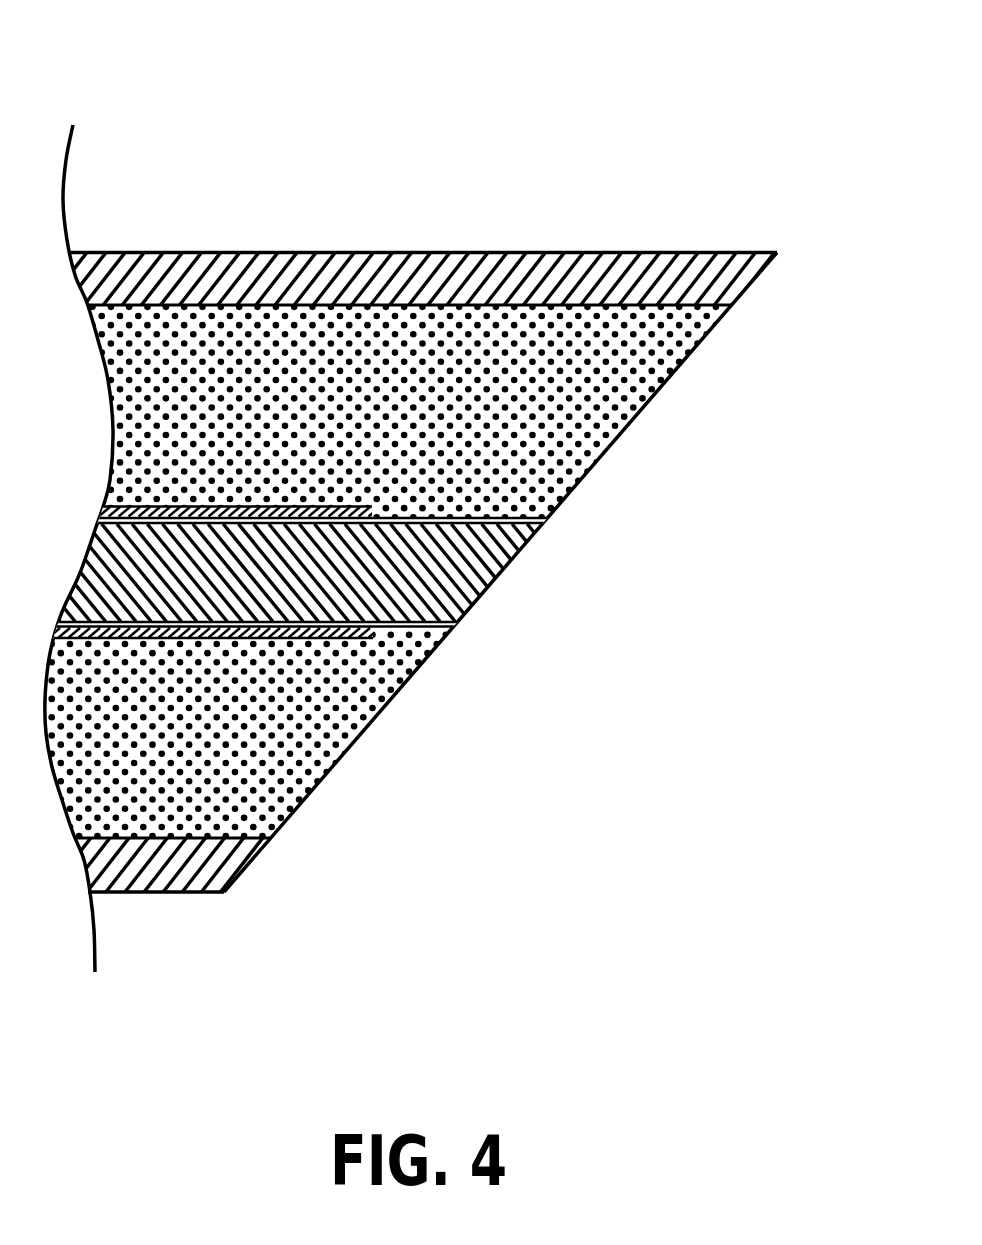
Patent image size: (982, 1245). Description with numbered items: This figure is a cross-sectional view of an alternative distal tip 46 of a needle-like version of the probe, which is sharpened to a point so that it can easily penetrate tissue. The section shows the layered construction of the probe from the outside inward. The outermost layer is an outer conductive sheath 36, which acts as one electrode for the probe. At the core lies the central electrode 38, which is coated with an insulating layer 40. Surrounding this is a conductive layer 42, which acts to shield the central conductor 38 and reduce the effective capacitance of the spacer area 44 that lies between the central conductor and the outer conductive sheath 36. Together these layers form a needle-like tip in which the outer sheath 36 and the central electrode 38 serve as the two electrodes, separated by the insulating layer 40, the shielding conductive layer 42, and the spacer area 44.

The distal tip 46 is at (350, 128).
The outer conductive sheath 36 is at (623, 258).
The spacer area 44 is at (700, 327).
The conductive layer 42 is at (372, 635).
The insulating layer 40 is at (543, 523).
The central electrode 38 is at (493, 582).